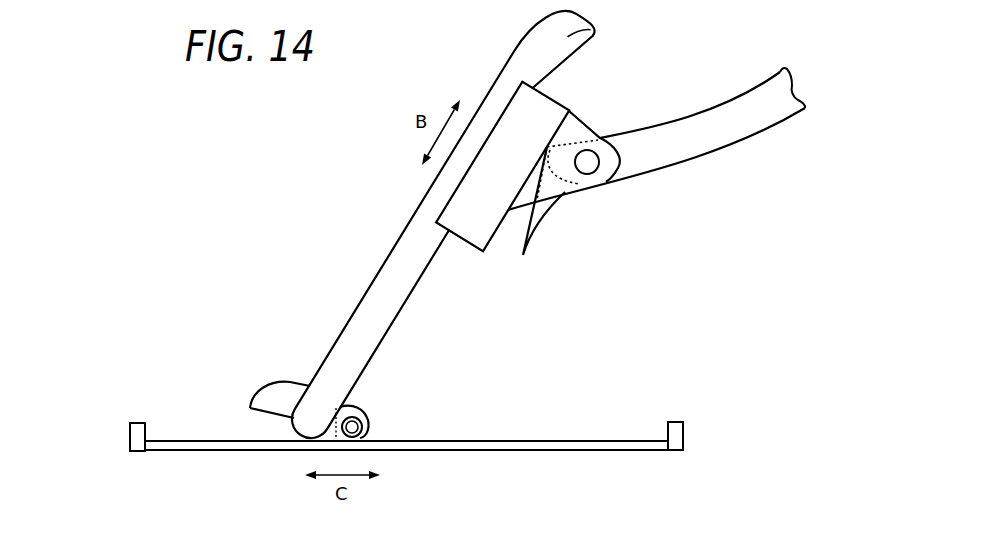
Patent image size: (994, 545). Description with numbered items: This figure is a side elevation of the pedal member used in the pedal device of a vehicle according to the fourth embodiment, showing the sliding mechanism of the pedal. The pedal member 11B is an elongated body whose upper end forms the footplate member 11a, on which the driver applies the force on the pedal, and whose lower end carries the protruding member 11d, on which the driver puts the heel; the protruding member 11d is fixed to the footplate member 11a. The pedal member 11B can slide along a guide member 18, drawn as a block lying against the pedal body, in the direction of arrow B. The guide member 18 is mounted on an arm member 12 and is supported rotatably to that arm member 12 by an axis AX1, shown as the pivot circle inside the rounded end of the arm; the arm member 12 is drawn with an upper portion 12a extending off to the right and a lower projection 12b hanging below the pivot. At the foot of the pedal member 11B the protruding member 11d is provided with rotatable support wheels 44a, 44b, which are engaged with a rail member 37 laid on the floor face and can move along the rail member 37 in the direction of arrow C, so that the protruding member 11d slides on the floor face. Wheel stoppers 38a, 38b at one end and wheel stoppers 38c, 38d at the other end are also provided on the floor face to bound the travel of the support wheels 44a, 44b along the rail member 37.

The pedal member 11B is at (370, 250).
The footplate member 11a is at (594, 27).
The protruding member 11d is at (280, 397).
The guide member 18 is at (467, 252).
The arm member 12 is at (656, 179).
The arm upper portion 12a is at (728, 118).
The arm lower projection 12b is at (550, 233).
The axis AX1 is at (587, 164).
The support wheel 44a is at (415, 413).
The support wheel 44b is at (367, 417).
The rail member 37 is at (562, 450).
The wheel stopper 38a is at (741, 436).
The wheel stopper 38b is at (683, 433).
The wheel stopper 38c is at (91, 430).
The wheel stopper 38d is at (130, 442).